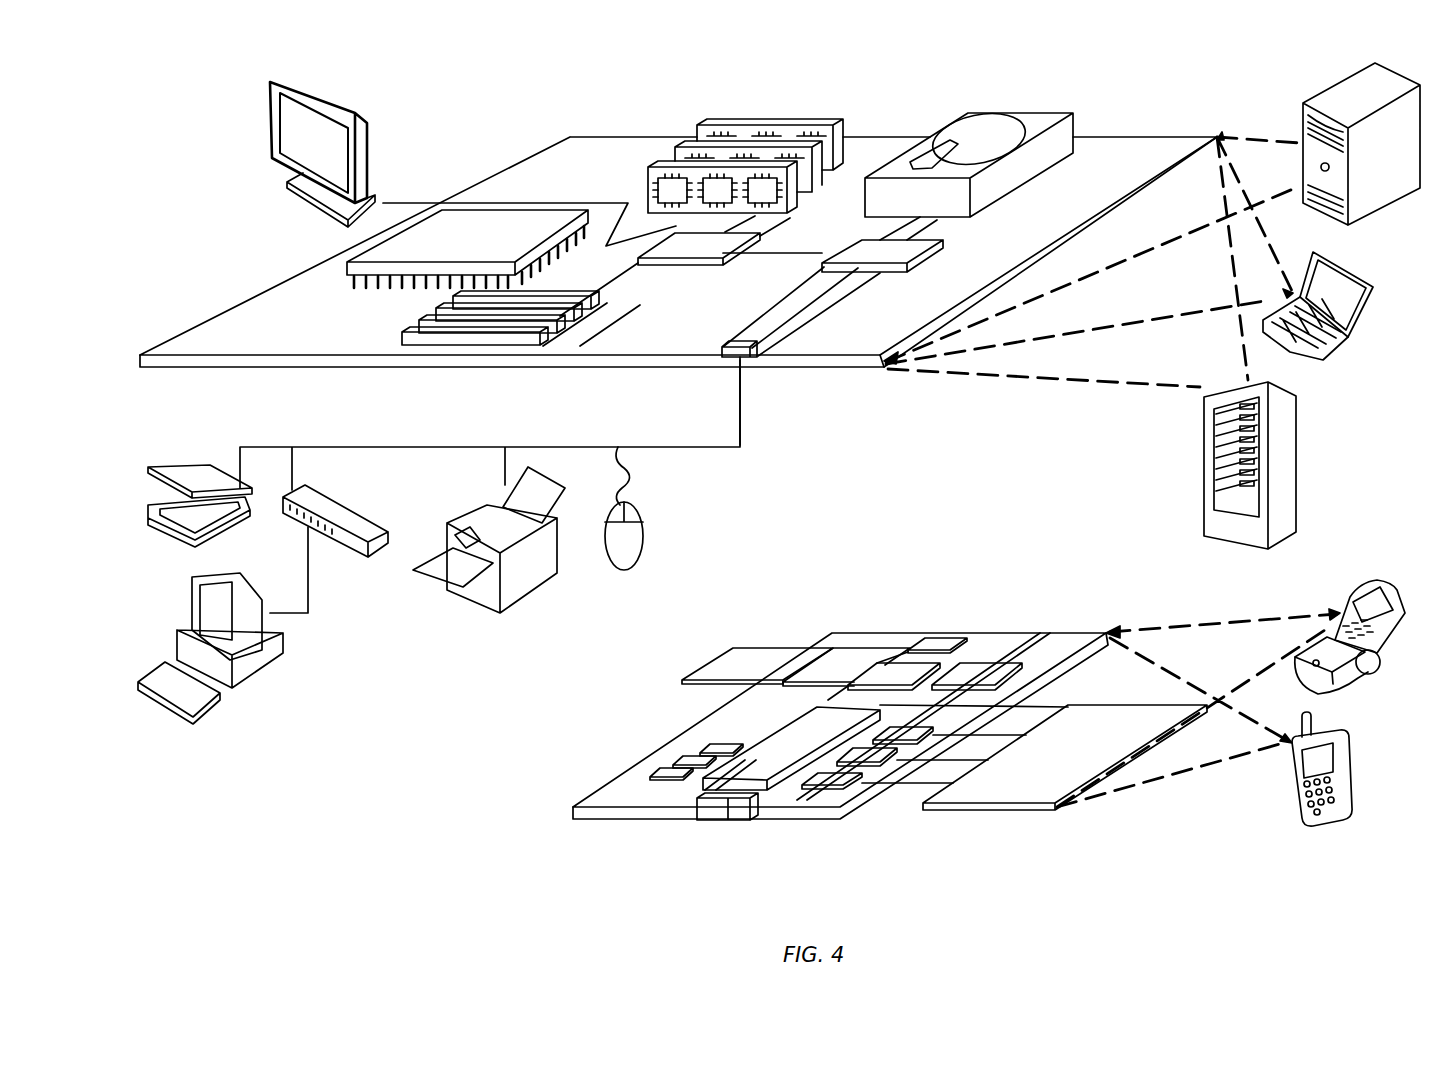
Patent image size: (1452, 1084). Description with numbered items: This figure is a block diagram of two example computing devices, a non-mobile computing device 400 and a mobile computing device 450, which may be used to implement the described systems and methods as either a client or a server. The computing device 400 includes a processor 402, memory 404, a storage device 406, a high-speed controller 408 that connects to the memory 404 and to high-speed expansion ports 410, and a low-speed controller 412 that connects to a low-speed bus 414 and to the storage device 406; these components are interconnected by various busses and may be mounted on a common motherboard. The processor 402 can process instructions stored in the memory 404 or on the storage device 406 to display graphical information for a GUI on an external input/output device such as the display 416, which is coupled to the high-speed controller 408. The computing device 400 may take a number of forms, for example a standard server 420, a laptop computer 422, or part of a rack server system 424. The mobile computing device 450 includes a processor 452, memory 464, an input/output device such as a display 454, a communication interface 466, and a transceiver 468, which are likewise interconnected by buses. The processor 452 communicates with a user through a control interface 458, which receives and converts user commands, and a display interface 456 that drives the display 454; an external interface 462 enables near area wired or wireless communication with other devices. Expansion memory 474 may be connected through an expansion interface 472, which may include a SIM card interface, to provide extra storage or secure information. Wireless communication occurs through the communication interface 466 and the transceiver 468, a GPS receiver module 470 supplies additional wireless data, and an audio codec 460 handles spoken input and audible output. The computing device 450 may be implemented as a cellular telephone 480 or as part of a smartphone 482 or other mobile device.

The computing device 400 is at (488, 110).
The processor 402 is at (347, 263).
The memory 404 is at (703, 125).
The storage device 406 is at (962, 112).
The high-speed controller 408 is at (677, 246).
The high-speed expansion ports 410 is at (440, 325).
The low-speed controller 412 is at (862, 248).
The low-speed bus 414 is at (757, 358).
The display 416 is at (272, 82).
The standard server 420 is at (1305, 122).
The laptop computer 422 is at (1380, 280).
The rack server system 424 is at (1205, 492).
The computing device 450 is at (549, 816).
The processor 452 is at (768, 778).
The display 454 is at (1020, 795).
The display interface 456 is at (840, 790).
The control interface 458 is at (878, 765).
The audio codec 460 is at (905, 740).
The external interface 462 is at (726, 815).
The memory 464 is at (663, 770).
The communication interface 466 is at (893, 672).
The transceiver 468 is at (976, 672).
The GPS receiver module 470 is at (932, 640).
The expansion interface 472 is at (812, 650).
The expansion memory 474 is at (740, 648).
The cellular telephone 480 is at (1353, 595).
The smartphone 482 is at (1290, 778).